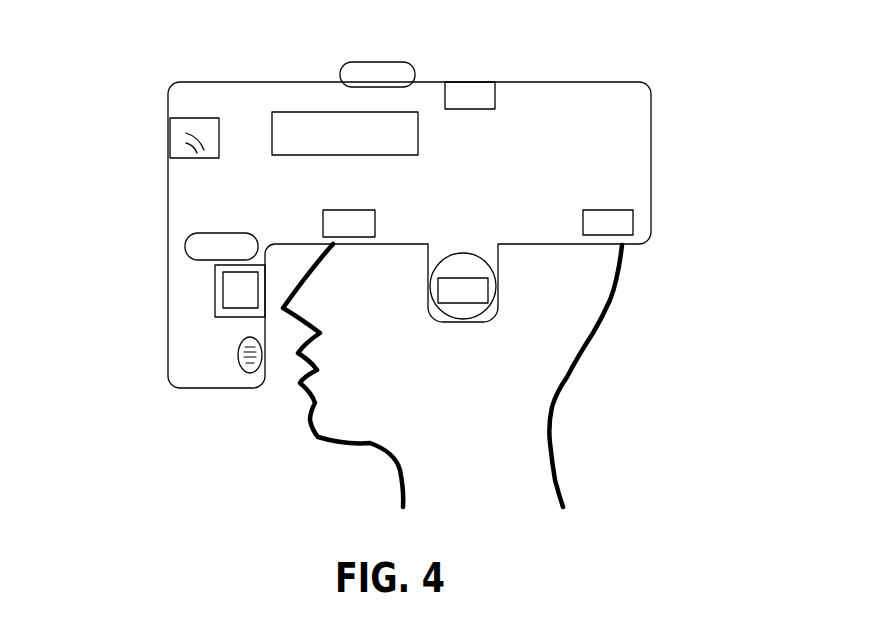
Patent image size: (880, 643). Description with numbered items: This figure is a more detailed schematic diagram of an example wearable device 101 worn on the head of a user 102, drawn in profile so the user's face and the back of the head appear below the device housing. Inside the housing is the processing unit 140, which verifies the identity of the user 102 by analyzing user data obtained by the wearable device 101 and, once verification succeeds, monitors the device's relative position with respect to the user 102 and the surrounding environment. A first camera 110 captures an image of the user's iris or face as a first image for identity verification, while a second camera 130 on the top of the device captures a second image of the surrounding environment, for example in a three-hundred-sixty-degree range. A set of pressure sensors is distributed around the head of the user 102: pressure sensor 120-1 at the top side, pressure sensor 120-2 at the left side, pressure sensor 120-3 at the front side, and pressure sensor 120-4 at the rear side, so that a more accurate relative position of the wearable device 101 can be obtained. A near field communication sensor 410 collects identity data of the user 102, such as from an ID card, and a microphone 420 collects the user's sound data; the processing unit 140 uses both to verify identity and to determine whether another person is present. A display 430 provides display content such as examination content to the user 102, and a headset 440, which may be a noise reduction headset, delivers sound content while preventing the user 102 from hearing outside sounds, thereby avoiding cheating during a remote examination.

The wearable device 101 is at (653, 116).
The user 102 is at (615, 310).
The first camera 110 is at (187, 247).
The pressure sensor 120-1 is at (496, 91).
The pressure sensor 120-2 is at (489, 285).
The pressure sensor 120-3 is at (357, 209).
The pressure sensor 120-4 is at (633, 217).
The second camera 130 is at (410, 63).
The processing unit 140 is at (302, 112).
The near field communication (NFC) sensor 410 is at (168, 145).
The microphone 420 is at (239, 368).
The display 430 is at (215, 290).
The headset 440 is at (458, 253).